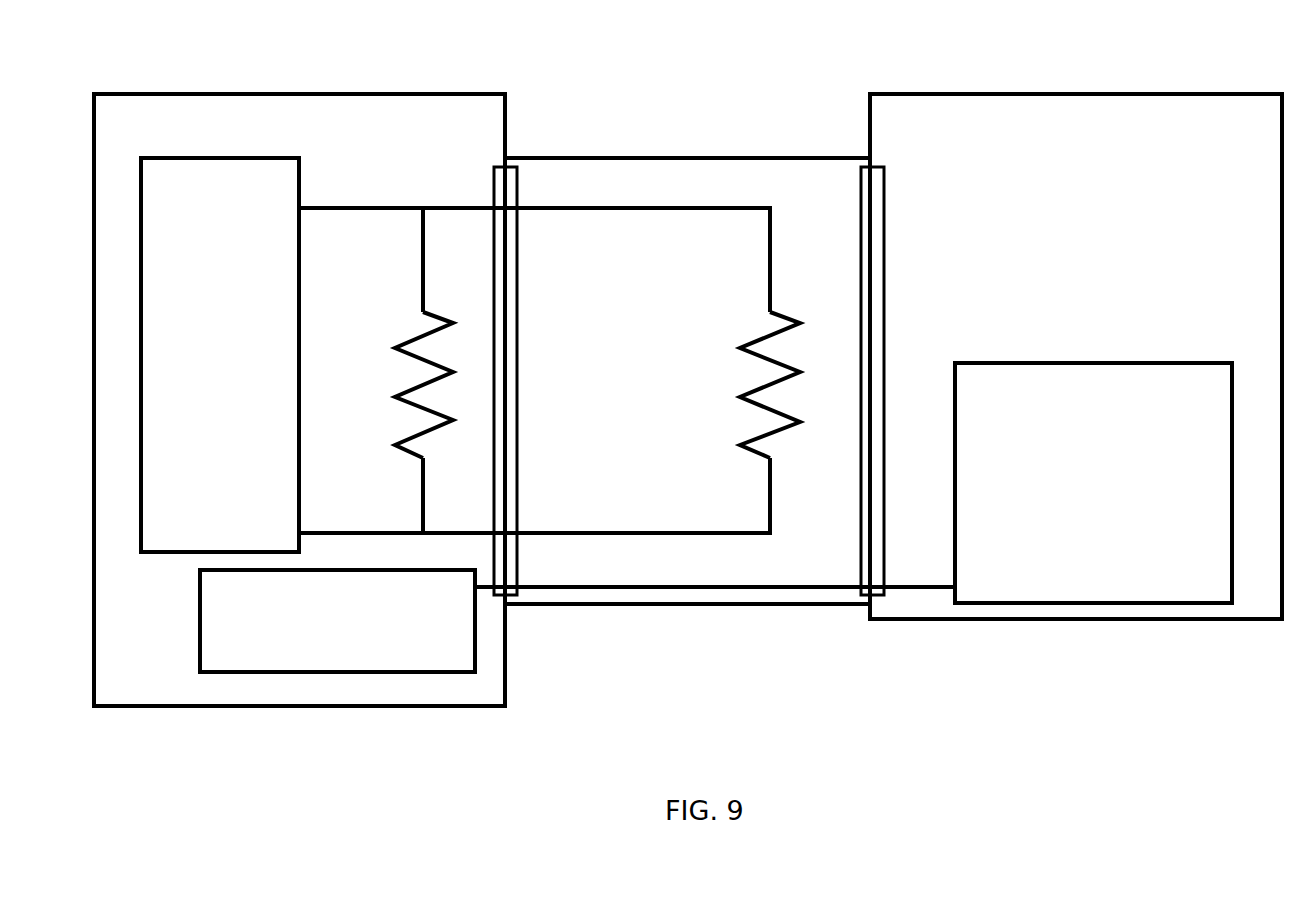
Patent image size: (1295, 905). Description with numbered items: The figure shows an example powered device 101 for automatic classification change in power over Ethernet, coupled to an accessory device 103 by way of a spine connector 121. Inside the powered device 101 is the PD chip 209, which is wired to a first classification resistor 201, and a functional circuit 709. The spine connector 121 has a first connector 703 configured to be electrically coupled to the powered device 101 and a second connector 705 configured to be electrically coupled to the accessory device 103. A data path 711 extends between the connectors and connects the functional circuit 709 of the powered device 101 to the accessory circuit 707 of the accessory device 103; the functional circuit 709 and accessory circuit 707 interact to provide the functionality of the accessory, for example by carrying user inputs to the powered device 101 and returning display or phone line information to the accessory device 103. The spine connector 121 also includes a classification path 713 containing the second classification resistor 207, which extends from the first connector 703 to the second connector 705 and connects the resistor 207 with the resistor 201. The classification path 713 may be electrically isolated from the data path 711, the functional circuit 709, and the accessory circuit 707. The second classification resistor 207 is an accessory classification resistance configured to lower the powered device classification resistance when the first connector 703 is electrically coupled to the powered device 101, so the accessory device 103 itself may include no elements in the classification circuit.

The powered device 101 is at (186, 93).
The accessory device 103 is at (958, 93).
The spine connector 121 is at (705, 157).
The resistor 201 is at (396, 347).
The second classification resistor 207 is at (802, 322).
The PD chip 209 is at (220, 355).
The first connector 703 is at (520, 180).
The second connector 705 is at (888, 176).
The accessory circuit 707 is at (1093, 483).
The functional circuit 709 is at (337, 621).
The data path 711 is at (796, 586).
The classification path 713 is at (742, 207).